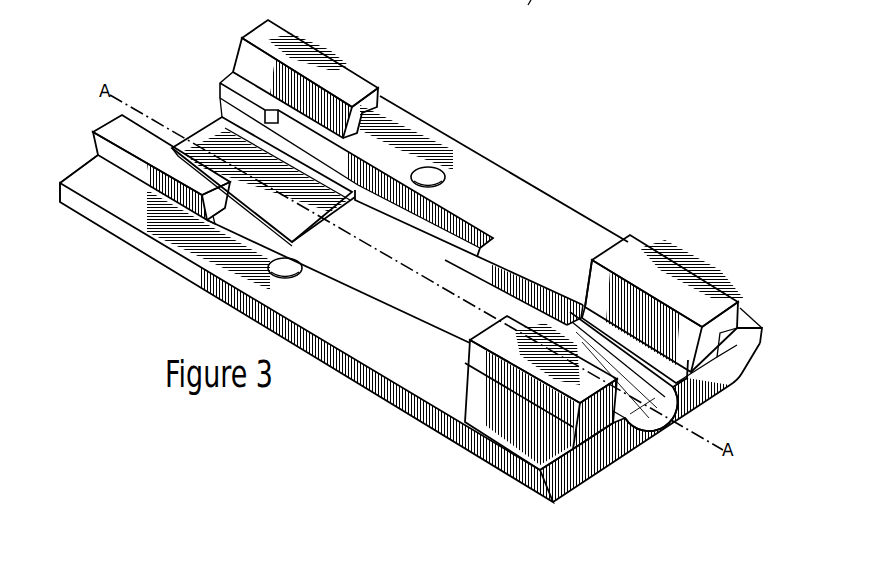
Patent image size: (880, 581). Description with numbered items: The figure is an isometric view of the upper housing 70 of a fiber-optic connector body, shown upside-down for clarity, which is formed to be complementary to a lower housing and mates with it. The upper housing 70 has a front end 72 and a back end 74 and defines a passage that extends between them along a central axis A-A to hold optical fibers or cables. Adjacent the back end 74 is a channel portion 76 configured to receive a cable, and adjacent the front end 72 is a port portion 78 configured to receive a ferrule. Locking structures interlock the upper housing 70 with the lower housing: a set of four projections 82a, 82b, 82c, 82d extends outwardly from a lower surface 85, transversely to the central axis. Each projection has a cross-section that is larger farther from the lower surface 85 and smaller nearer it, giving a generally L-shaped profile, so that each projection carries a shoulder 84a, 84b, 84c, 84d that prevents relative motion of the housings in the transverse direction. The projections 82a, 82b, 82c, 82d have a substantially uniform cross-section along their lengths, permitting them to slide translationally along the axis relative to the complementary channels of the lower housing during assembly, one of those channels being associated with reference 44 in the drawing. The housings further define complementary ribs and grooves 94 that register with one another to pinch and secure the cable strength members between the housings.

The clamp assembly 44 is at (529, 3).
The upper housing 70 is at (498, 183).
The front end 72 is at (181, 83).
The back end 74 is at (593, 487).
The channel portion 76 is at (645, 415).
The port portion 78 is at (208, 118).
The projection 82a is at (120, 127).
The projection 82b is at (307, 53).
The projection 82c is at (523, 360).
The projection 82d is at (680, 280).
The shoulder 84a is at (95, 147).
The shoulder 84b is at (372, 82).
The shoulder 84c is at (475, 355).
The shoulder 84d is at (742, 312).
The lower surface 85 is at (555, 232).
The ribs and grooves 94 is at (582, 300).